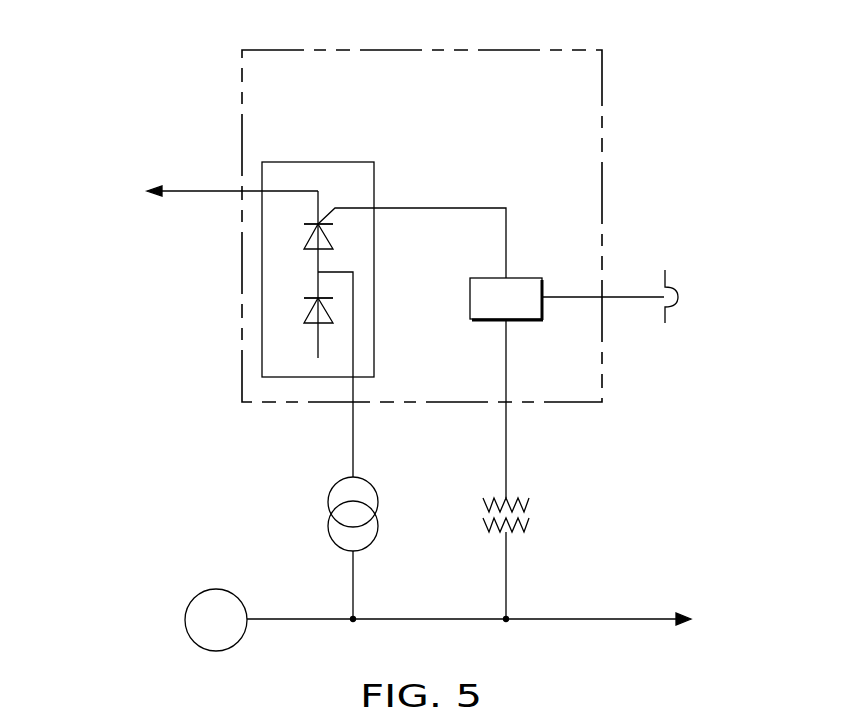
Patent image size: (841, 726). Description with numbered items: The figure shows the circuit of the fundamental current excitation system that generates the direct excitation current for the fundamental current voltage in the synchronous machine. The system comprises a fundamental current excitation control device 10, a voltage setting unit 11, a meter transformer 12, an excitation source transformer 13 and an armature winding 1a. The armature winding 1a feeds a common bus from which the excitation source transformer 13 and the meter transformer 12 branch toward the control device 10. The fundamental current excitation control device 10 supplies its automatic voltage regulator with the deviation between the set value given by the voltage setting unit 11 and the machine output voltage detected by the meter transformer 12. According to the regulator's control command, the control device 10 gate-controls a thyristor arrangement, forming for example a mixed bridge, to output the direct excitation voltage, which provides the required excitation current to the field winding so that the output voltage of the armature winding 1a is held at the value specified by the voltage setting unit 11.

The fundamental current excitation control device 10 is at (571, 48).
The voltage setting unit 11 is at (666, 284).
The meter transformer 12 is at (529, 513).
The excitation source transformer 13 is at (328, 527).
The armature winding 1a is at (187, 635).